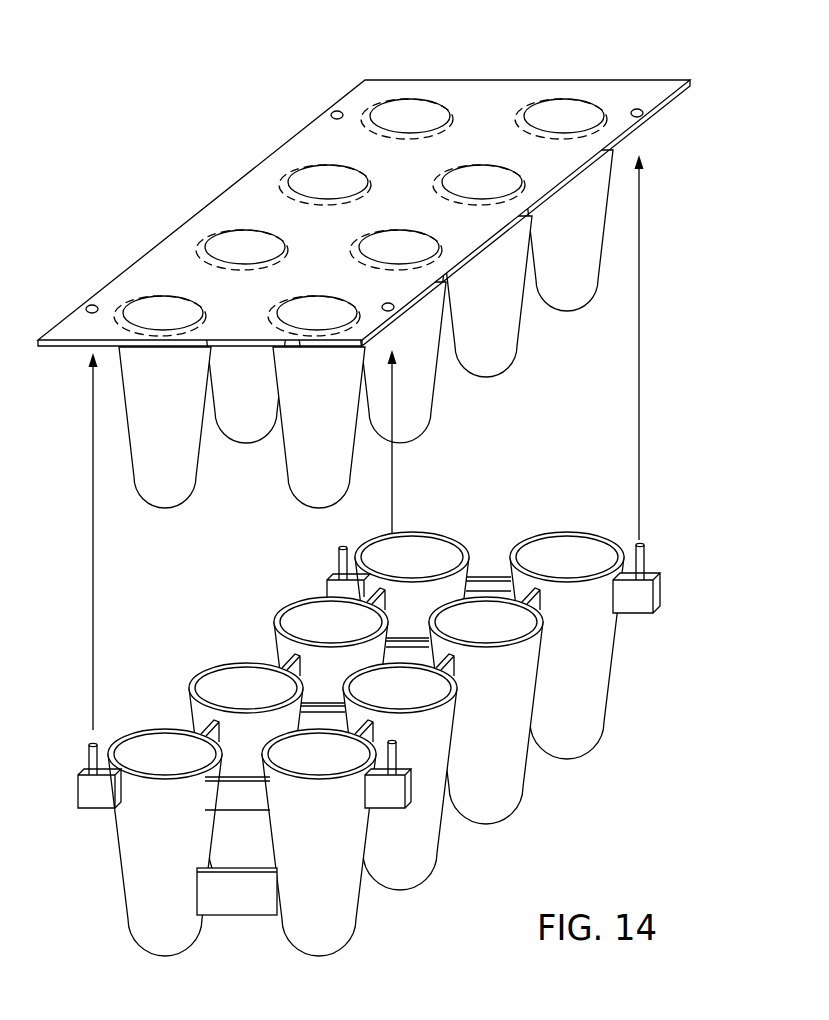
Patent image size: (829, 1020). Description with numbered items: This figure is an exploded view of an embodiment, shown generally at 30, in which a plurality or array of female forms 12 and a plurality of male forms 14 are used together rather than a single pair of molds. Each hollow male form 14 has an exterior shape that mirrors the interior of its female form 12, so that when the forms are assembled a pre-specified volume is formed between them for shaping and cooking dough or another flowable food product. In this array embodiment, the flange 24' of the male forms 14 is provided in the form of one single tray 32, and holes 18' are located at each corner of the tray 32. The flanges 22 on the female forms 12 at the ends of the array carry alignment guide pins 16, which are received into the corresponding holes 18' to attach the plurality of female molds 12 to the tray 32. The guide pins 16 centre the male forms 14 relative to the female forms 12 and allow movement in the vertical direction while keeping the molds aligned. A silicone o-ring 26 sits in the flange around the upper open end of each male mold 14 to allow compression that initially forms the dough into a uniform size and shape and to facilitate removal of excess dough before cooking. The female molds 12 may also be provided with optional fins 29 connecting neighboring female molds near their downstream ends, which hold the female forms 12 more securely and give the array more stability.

The apparatus having a plurality of female forms and male forms 30 is at (91, 111).
The silicone o-ring 26 is at (362, 108).
The tray 32 is at (263, 191).
The flange of the male forms 24' is at (364, 180).
The holes 18' is at (395, 208).
The male form 14 is at (575, 273).
The guide pins 16 is at (643, 560).
The flange 22 is at (635, 603).
The female form 12 is at (508, 767).
The fins 29 is at (235, 900).